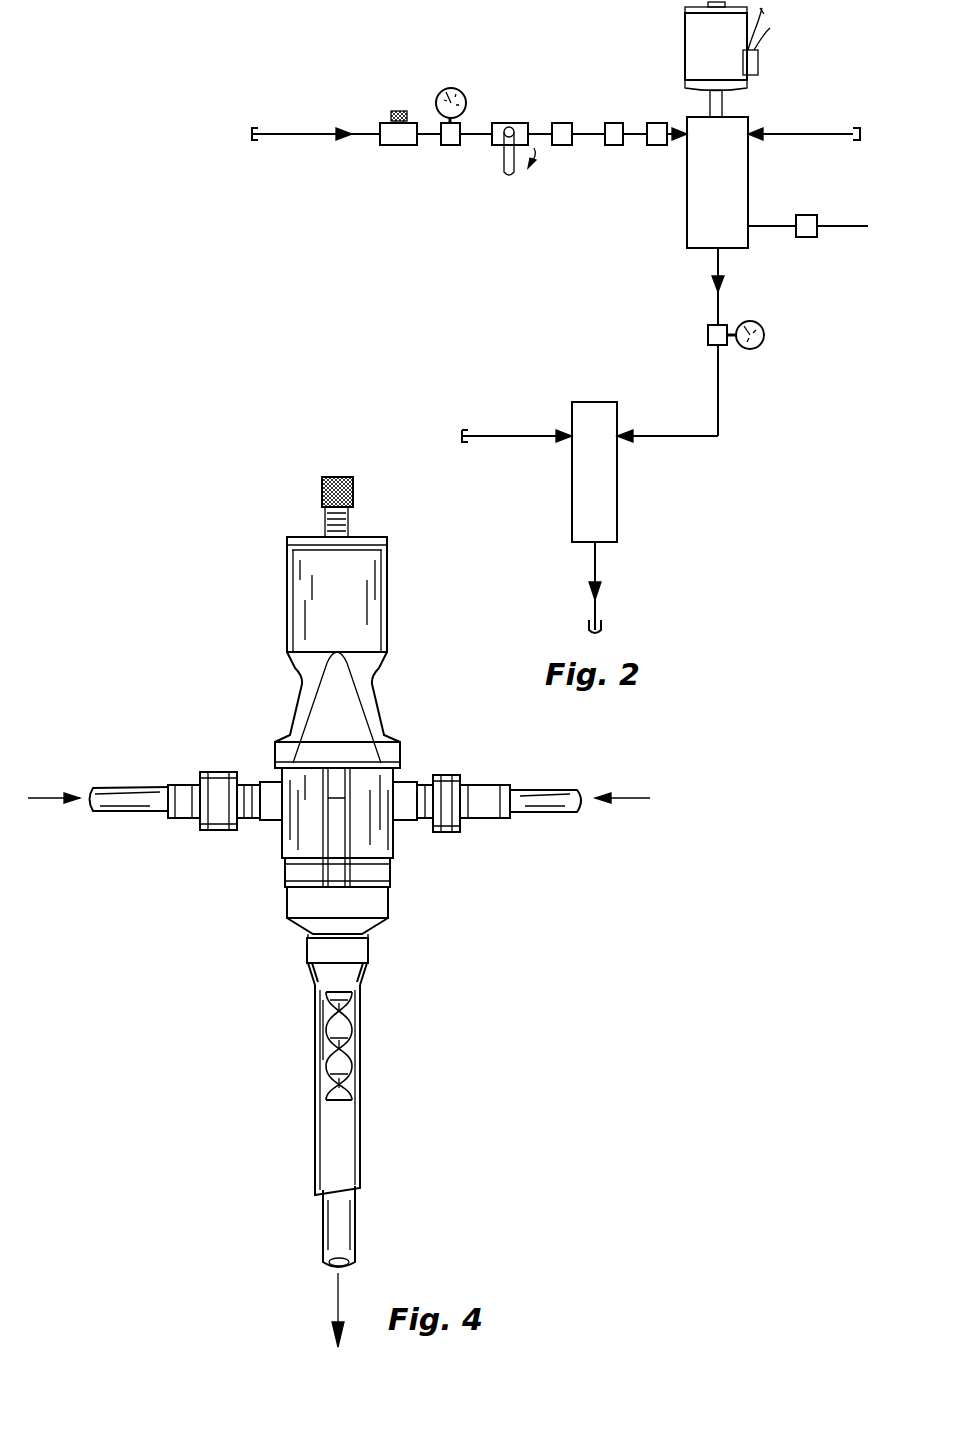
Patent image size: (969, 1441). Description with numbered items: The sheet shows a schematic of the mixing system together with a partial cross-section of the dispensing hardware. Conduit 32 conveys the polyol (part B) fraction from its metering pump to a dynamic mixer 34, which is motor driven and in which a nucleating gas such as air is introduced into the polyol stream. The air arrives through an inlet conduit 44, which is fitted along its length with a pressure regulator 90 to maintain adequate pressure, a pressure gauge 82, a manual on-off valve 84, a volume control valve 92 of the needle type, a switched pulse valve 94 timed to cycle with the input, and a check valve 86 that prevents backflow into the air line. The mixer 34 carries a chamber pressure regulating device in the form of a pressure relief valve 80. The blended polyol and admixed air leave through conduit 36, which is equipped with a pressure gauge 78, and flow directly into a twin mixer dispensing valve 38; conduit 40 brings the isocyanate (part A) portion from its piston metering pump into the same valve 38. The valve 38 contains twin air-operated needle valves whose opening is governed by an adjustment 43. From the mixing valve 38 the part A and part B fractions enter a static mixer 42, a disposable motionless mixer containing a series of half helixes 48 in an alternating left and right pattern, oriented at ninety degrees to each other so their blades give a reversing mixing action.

In FIG. 2, the conduit 32 is at (826, 132).
In FIG. 2, the dynamic mixer 34 is at (748, 193).
In FIG. 2, the conduit 36 is at (718, 416).
In FIG. 4, the conduit 36 is at (557, 814).
In FIG. 2, the twin mixer dispensing valve 38 is at (617, 500).
In FIG. 4, the twin mixer dispensing valve 38 is at (392, 880).
In FIG. 2, the conduit 40 is at (518, 440).
In FIG. 4, the conduit 40 is at (113, 812).
In FIG. 2, the static mixer 42 is at (598, 565).
In FIG. 4, the static mixer 42 is at (357, 1150).
In FIG. 4, the adjustment 43 is at (320, 500).
In FIG. 2, the inlet conduit 44 is at (305, 145).
In FIG. 4, the half helixes 48 is at (353, 1043).
In FIG. 2, the pressure gauge 78 is at (764, 340).
In FIG. 2, the pressure relief valve 80 is at (808, 238).
In FIG. 2, the pressure gauge 82 is at (464, 90).
In FIG. 2, the manual on-off valve 84 is at (497, 146).
In FIG. 2, the check valve 86 is at (658, 123).
In FIG. 2, the pressure regulator 90 is at (386, 122).
In FIG. 2, the volume control valve 92 is at (561, 123).
In FIG. 2, the switched pulse valve 94 is at (614, 146).